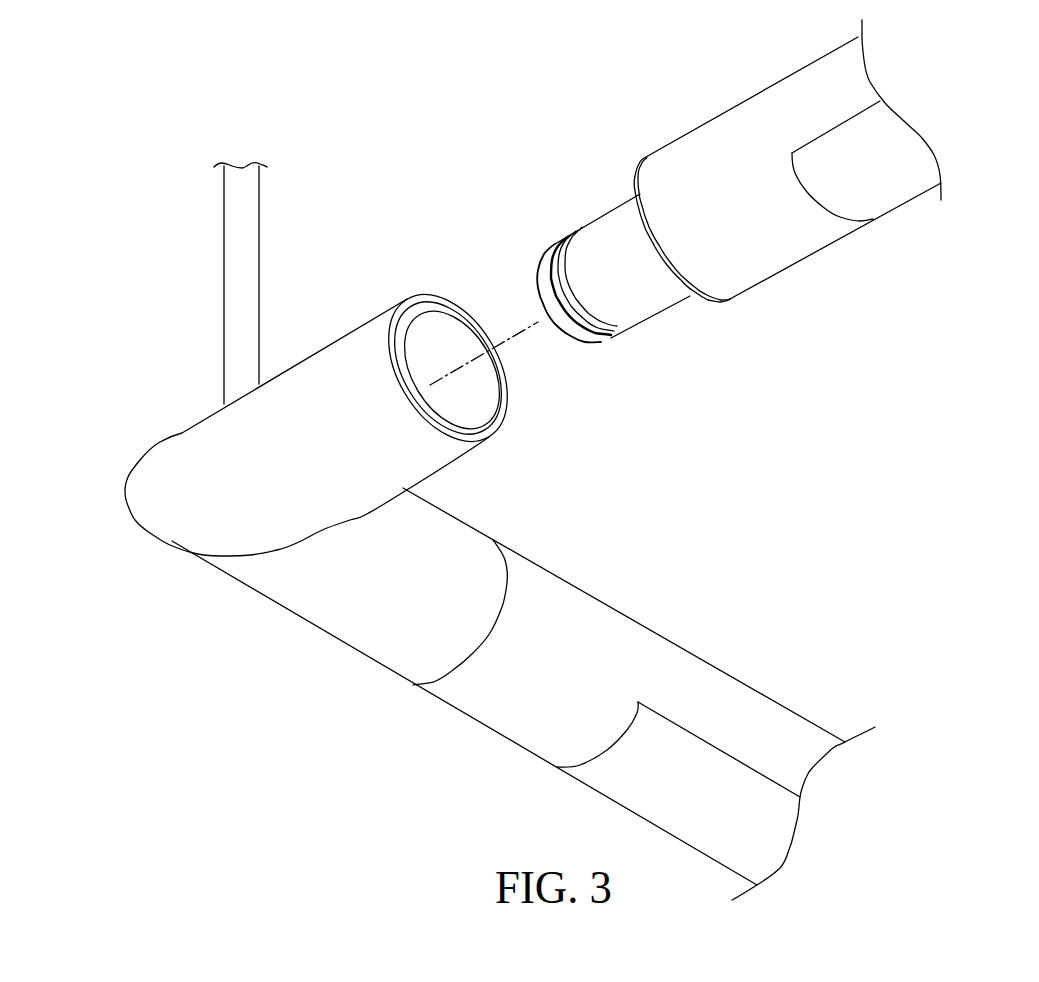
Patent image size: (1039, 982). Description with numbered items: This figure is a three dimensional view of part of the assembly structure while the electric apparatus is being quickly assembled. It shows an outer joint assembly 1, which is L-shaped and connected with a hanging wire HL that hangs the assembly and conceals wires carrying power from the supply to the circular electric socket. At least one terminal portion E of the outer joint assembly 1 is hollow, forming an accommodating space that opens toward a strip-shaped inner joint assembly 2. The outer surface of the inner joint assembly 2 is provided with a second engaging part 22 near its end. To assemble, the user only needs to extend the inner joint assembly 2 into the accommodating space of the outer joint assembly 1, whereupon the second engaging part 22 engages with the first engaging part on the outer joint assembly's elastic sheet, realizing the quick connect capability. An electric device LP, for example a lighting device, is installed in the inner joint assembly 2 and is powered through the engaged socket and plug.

The outer joint assembly 1 is at (340, 337).
The inner joint assembly 2 is at (693, 128).
The second engaging part 22 is at (598, 333).
The terminal portion E is at (433, 297).
The hanging wire HL is at (248, 240).
The electric device LP is at (897, 197).